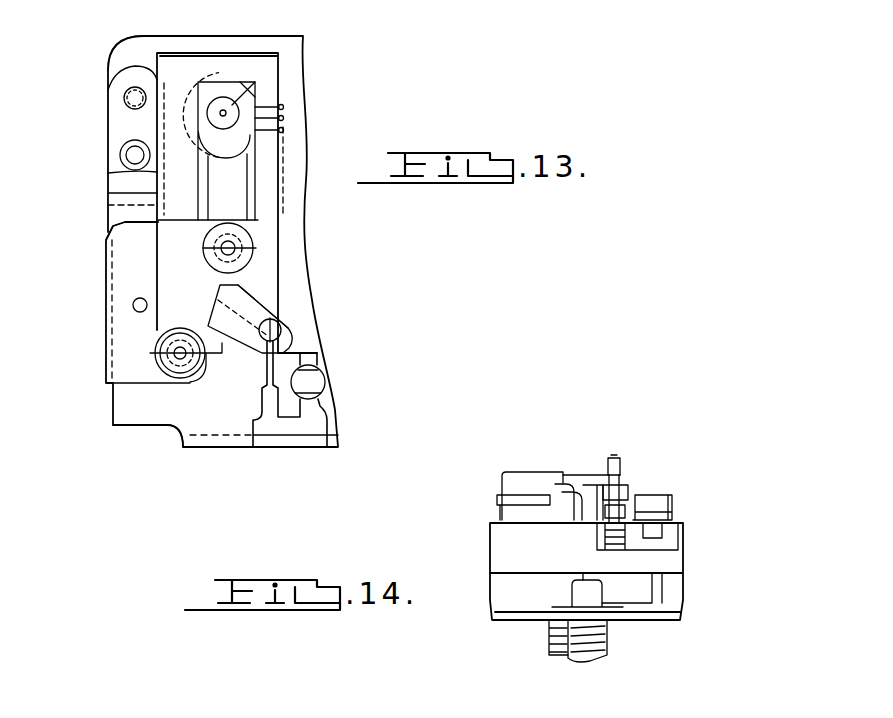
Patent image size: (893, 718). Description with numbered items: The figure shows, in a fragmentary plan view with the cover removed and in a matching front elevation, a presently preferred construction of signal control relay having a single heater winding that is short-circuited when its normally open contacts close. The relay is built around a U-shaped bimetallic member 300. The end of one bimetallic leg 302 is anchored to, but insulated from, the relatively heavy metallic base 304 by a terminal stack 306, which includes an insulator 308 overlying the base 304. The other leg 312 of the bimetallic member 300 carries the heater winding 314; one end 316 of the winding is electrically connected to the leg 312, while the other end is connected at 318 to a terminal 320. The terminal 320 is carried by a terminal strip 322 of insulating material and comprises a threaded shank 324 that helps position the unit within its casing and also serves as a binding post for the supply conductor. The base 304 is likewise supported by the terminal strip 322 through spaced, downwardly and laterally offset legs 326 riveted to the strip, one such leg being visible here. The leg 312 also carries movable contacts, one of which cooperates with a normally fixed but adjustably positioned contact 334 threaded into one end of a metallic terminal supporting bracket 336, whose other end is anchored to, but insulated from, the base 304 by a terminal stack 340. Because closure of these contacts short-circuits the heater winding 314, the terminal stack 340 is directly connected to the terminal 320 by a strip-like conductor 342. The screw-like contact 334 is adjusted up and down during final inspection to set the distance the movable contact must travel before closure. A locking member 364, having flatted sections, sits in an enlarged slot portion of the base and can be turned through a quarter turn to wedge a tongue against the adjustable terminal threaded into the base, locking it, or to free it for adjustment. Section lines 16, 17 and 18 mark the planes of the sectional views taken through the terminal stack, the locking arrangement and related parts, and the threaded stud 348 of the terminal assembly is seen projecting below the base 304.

In FIG. 13, the bimetallic member 300 is at (168, 63).
In FIG. 14, the bimetallic member 300 is at (529, 472).
In FIG. 13, the bimetallic leg 302 is at (170, 173).
In FIG. 13, the base 304 is at (125, 222).
In FIG. 13, the terminal stack 306 is at (173, 382).
In FIG. 13, the insulator 308 is at (112, 278).
In FIG. 13, the bimetallic leg 312 is at (273, 147).
In FIG. 13, the heater winding 314 is at (282, 98).
In FIG. 13, the heater winding end 316 is at (270, 312).
In FIG. 13, the connection 318 is at (229, 107).
In FIG. 13, the terminal 320 is at (215, 100).
In FIG. 14, the terminal 320 is at (595, 592).
In FIG. 13, the terminal strip 322 is at (118, 62).
In FIG. 14, the threaded shank 324 is at (608, 647).
In FIG. 13, the leg 326 is at (120, 120).
In FIG. 13, the adjustable fixed contact 334 is at (287, 329).
In FIG. 13, the terminal supporting bracket 336 is at (250, 292).
In FIG. 14, the terminal supporting bracket 336 is at (584, 477).
In FIG. 13, the terminal stack 340 is at (228, 248).
In FIG. 14, the strip-like conductor 342 is at (657, 590).
In FIG. 14, the threaded stud 348 is at (563, 652).
In FIG. 13, the locking member 364 is at (325, 377).
In FIG. 14, the locking member 364 is at (677, 505).
In FIG. 13, the section line 16- 16 is at (288, 200).
In FIG. 13, the section line 17- 17 is at (155, 345).
In FIG. 13, the section line 18- 18 is at (207, 258).